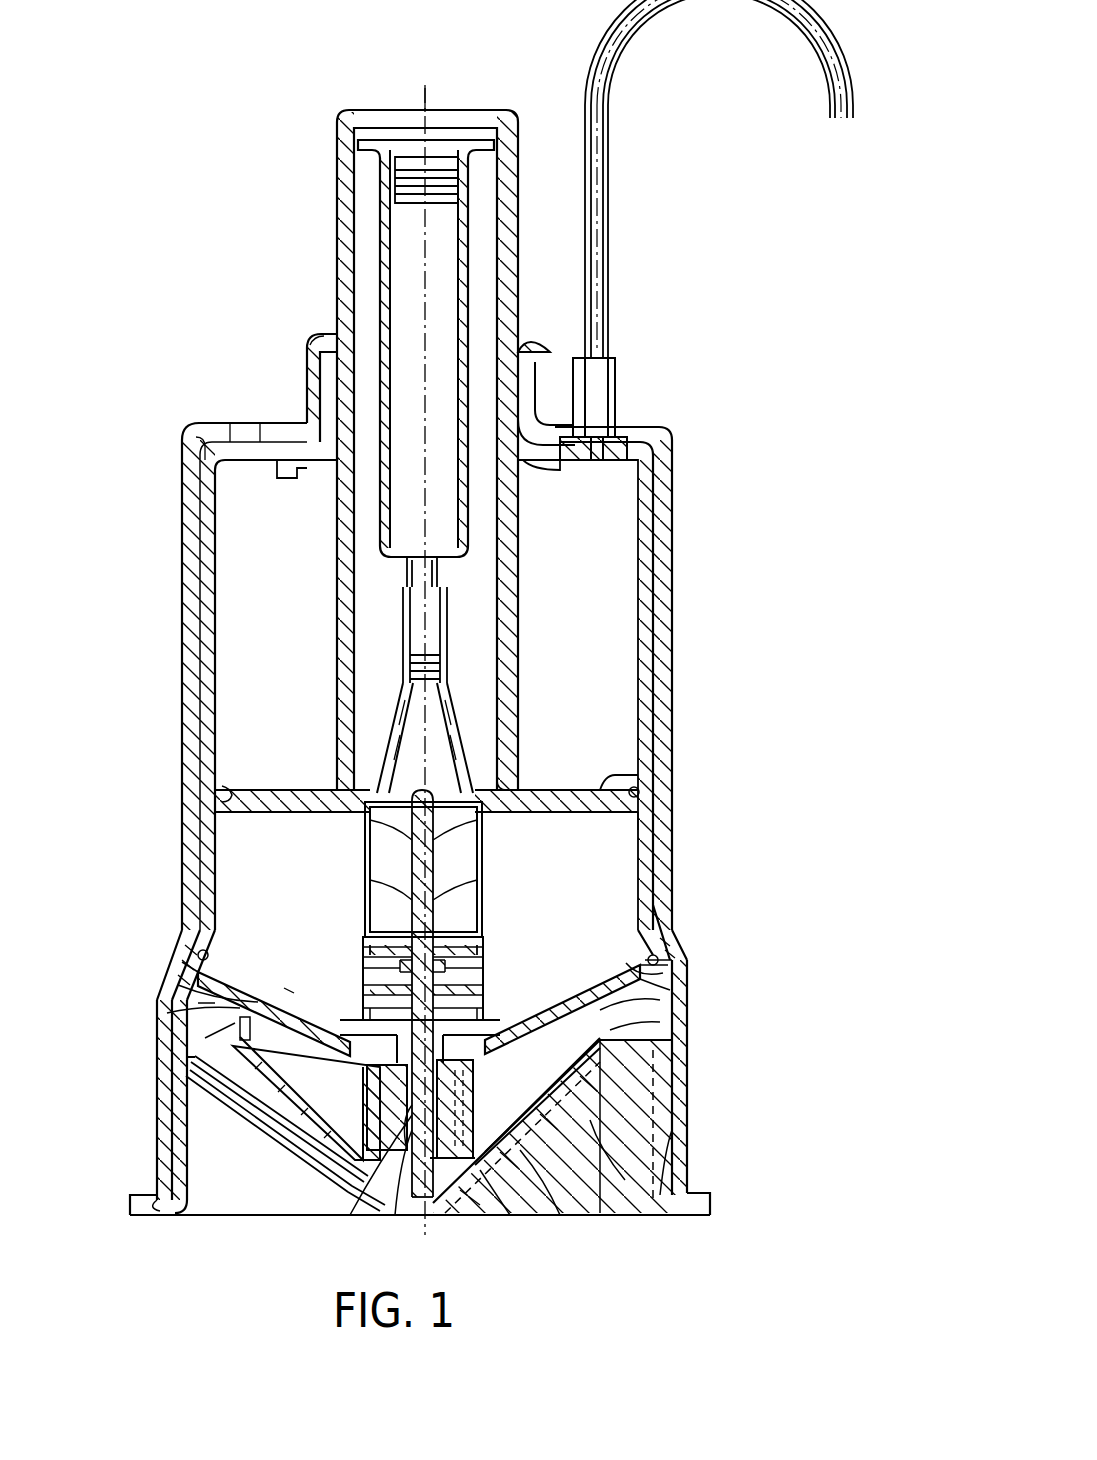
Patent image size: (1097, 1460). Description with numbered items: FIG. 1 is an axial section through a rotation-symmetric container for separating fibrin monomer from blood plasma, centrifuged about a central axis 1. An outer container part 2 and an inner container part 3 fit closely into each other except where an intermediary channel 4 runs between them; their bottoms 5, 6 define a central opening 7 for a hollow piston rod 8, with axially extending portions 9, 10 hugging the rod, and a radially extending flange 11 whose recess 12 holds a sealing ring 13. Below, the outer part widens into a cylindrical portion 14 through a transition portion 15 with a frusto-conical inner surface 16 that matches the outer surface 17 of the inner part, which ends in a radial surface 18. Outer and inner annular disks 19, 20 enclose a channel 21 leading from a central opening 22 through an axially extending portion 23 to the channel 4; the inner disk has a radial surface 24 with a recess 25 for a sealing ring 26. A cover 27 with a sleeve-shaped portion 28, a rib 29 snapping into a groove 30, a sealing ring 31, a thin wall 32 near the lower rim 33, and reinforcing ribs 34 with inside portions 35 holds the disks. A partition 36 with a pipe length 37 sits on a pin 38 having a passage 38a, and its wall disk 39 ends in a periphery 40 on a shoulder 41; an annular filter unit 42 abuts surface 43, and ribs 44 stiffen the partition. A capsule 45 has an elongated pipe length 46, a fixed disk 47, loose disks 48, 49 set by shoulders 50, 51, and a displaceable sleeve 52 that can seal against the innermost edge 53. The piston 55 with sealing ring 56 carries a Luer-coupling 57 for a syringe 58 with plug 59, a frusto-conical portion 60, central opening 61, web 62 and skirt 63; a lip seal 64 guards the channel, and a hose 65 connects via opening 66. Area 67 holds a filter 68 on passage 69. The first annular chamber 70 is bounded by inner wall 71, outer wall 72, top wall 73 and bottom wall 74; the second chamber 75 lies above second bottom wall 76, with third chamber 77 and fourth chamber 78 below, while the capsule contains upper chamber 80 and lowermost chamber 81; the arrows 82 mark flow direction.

The central axis 1 is at (430, 110).
The outer container part 2 is at (182, 698).
The inner container part 3 is at (203, 678).
The intermediary channel 4 is at (203, 628).
The bottom 5 is at (268, 418).
The bottom 6 is at (260, 461).
The central opening 7 is at (316, 373).
The hollow piston rod 8 is at (345, 240).
The axially extending portion 9 is at (313, 348).
The axially extending portion 10 is at (308, 403).
The radially extending flange 11 is at (532, 338).
The recess 12 is at (528, 343).
The sealing ring 13 is at (594, 353).
The cylindrical portion 14 is at (680, 1075).
The transition portion 15 is at (668, 938).
The frusto-conical inner surface 16 is at (653, 938).
The outer surface 17 is at (668, 953).
The radial surface 18 is at (178, 946).
The outer annular disk 19 is at (198, 1023).
The inner annular disk 20 is at (198, 998).
The channel 21 is at (188, 986).
The central opening 22 is at (360, 1050).
The axially extending portion 23 is at (184, 966).
The radial surface 24 is at (666, 966).
The recess 25 is at (670, 983).
The sealing ring 26 is at (653, 998).
The cover 27 is at (658, 1123).
The sleeve-shaped portion 28 is at (178, 1158).
The circumferential rib 29 is at (168, 1203).
The circumferential groove 30 is at (158, 1210).
The sealing ring 31 is at (194, 1003).
The wall 32 is at (208, 960).
The lower rim 33 is at (716, 1220).
The reinforcing radial rib 34 is at (558, 1198).
The inside rib portion 35 is at (653, 1018).
The partition 36 is at (464, 1160).
The central pipe length 37 is at (403, 1160).
The pin 38 is at (418, 1198).
The passage 38a is at (438, 1213).
The wall disk 39 is at (603, 1203).
The periphery 40 is at (663, 1093).
The shoulder 41 is at (680, 1151).
The annular filter unit 42 is at (203, 1038).
The radially shaped surface 43 is at (638, 1043).
The reinforcing radial ribs 44 is at (503, 1193).
The capsule 45 is at (440, 923).
The elongated pipe length 46 is at (440, 878).
The radial disk 47 is at (483, 950).
The radial annular disk 48 is at (366, 903).
The radial annular disk 49 is at (366, 1003).
The circumferential shoulder 50 is at (475, 945).
The circumferential shoulder 51 is at (450, 990).
The displaceable sleeve 52 is at (366, 983).
The innermost edge 53 is at (462, 1058).
The piston 55 is at (573, 788).
The sealing ring 56 is at (660, 793).
The Luer-coupling 57 is at (440, 628).
The syringe 58 is at (386, 560).
The piston-acting plug 59 is at (440, 160).
The frusto-conical portion 60 is at (462, 748).
The central opening 61 is at (478, 818).
The web 62 is at (414, 658).
The skirt 63 is at (362, 850).
The lip seal 64 is at (543, 463).
The hose 65 is at (608, 210).
The opening 66 is at (600, 458).
The area 67 is at (393, 1153).
The filter 68 is at (388, 1148).
The passage 69 is at (440, 903).
The first annular chamber 70 is at (628, 588).
The cylindrical inner wall 71 is at (510, 578).
The cylindrical outer wall 72 is at (650, 666).
The top wall 73 is at (228, 435).
The bottom wall 74 is at (618, 776).
The second chamber 75 is at (655, 836).
The second bottom wall 76 is at (626, 963).
The third chamber 77 is at (298, 1093).
The fourth chamber 78 is at (258, 1063).
The upper chamber 80 is at (366, 937).
The lowermost chamber 81 is at (366, 960).
The arrow A 82 is at (288, 983).